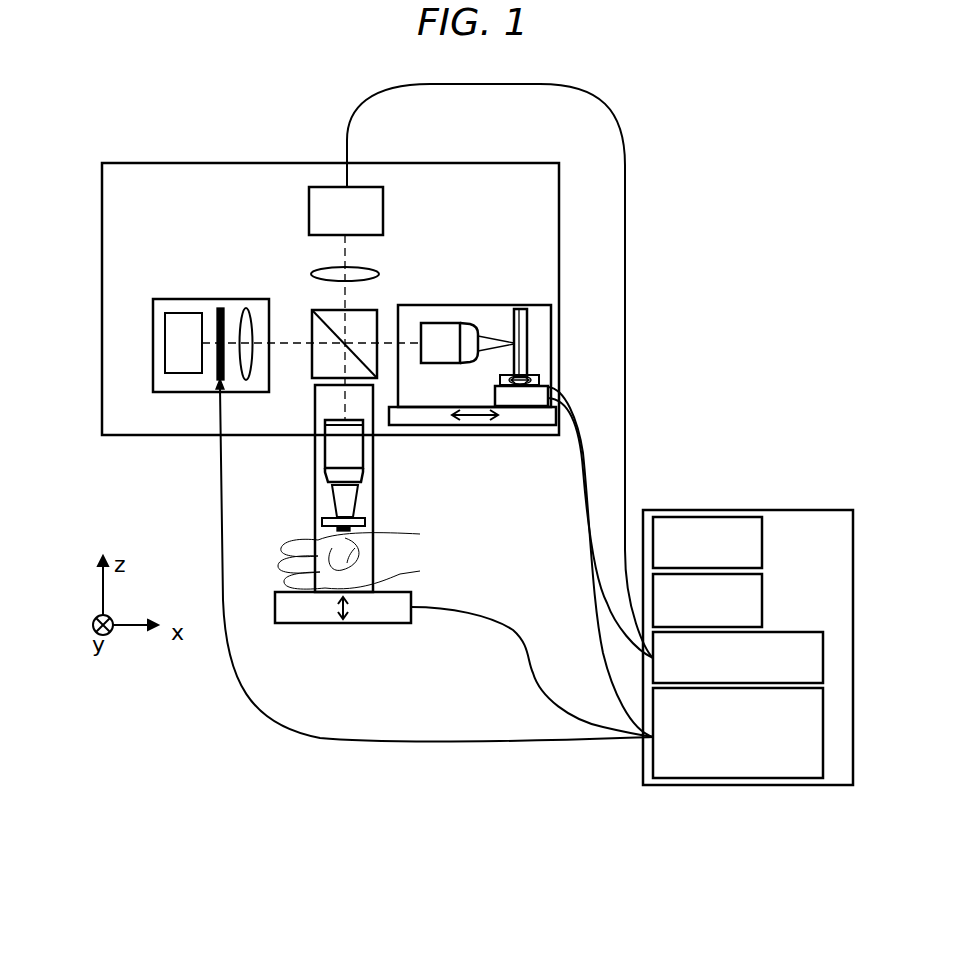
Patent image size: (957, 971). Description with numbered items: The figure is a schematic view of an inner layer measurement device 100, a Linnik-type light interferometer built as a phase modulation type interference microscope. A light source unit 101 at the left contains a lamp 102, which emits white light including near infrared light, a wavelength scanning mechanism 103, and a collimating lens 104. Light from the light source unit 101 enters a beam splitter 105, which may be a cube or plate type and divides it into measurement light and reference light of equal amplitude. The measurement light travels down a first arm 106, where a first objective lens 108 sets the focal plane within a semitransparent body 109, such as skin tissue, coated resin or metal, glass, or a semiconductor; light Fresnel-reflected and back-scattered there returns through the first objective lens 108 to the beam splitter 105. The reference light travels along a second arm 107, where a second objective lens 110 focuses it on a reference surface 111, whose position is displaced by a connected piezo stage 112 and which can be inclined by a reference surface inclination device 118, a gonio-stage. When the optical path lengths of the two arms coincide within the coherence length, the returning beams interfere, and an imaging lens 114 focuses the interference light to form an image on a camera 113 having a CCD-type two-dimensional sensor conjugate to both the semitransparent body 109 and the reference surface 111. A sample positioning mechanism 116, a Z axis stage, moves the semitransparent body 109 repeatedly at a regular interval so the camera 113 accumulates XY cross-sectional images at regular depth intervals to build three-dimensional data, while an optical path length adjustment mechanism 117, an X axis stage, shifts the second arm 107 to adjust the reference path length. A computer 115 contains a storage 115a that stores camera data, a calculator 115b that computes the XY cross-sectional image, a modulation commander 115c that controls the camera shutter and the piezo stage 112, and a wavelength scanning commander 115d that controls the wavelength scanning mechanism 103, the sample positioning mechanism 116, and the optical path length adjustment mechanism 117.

The inner layer measurement device 100 is at (703, 127).
The light source unit 101 is at (158, 392).
The lamp 102 is at (170, 323).
The wavelength scanning mechanism 103 is at (217, 310).
The collimating lens 104 is at (243, 312).
The beam splitter 105 is at (325, 363).
The first arm 106 is at (313, 447).
The second arm 107 is at (430, 305).
The first objective lens 108 is at (352, 448).
The semitransparent body 109 is at (385, 557).
The second objective lens 110 is at (448, 328).
The reference surface 111 is at (527, 309).
The piezo stage 112 is at (530, 375).
The camera 113 is at (362, 193).
The imaging lens 114 is at (383, 268).
The computer 115 is at (750, 510).
The storage 115a is at (762, 547).
The calculator 115b is at (762, 585).
The modulation commander 115c is at (760, 632).
The wavelength scanning commander 115d is at (760, 778).
The sample positioning mechanism 116 is at (373, 623).
The optical path length adjustment mechanism 117 is at (472, 427).
The reference surface inclination device 118 is at (538, 398).